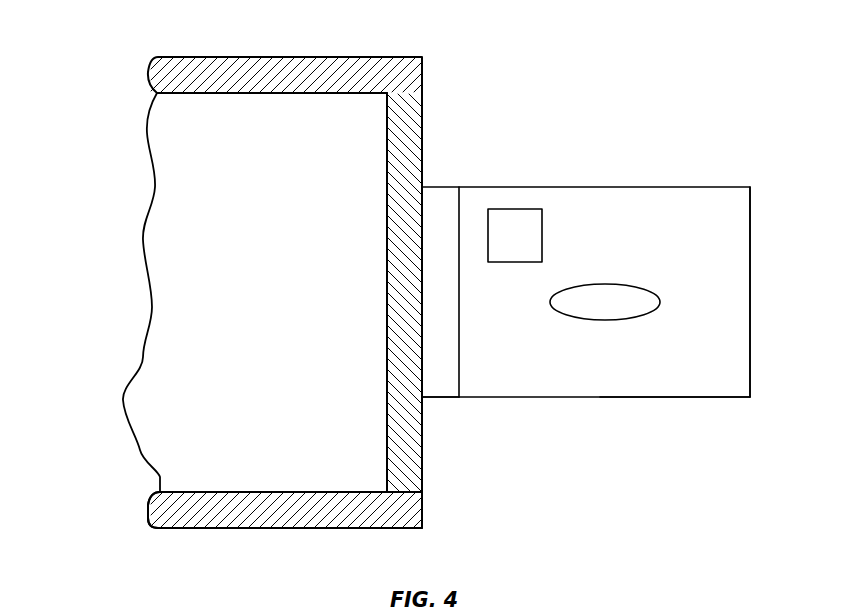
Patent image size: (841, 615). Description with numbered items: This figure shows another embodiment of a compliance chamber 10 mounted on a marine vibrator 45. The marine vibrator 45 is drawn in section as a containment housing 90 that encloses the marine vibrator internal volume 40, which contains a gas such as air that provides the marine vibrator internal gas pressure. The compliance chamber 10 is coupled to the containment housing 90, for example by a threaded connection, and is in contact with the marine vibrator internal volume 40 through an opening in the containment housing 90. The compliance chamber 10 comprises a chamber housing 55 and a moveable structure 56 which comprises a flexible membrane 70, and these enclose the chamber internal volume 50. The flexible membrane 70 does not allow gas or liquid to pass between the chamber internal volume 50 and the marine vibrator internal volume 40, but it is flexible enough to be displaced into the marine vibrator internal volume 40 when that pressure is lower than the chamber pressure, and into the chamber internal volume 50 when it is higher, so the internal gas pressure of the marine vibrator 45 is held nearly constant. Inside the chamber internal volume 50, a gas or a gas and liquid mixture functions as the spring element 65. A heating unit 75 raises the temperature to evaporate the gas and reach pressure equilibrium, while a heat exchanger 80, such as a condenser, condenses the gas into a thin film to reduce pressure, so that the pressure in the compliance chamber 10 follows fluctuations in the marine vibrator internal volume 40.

The compliance chamber 10 is at (607, 283).
The marine vibrator internal volume 40 is at (363, 143).
The marine vibrator 45 is at (254, 299).
The chamber internal volume 50 is at (732, 191).
The chamber housing 55 is at (693, 397).
The moveable structure 56 is at (440, 373).
The spring element 65 is at (716, 290).
The flexible membrane 70 is at (441, 193).
The heating unit 75 is at (530, 235).
The heat exchanger 80 is at (607, 307).
The containment housing 90 is at (210, 515).